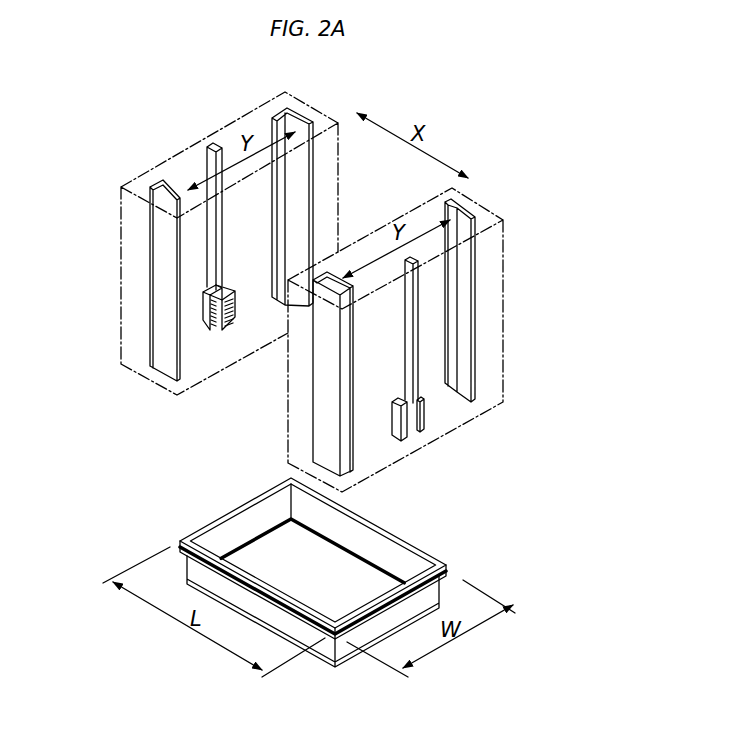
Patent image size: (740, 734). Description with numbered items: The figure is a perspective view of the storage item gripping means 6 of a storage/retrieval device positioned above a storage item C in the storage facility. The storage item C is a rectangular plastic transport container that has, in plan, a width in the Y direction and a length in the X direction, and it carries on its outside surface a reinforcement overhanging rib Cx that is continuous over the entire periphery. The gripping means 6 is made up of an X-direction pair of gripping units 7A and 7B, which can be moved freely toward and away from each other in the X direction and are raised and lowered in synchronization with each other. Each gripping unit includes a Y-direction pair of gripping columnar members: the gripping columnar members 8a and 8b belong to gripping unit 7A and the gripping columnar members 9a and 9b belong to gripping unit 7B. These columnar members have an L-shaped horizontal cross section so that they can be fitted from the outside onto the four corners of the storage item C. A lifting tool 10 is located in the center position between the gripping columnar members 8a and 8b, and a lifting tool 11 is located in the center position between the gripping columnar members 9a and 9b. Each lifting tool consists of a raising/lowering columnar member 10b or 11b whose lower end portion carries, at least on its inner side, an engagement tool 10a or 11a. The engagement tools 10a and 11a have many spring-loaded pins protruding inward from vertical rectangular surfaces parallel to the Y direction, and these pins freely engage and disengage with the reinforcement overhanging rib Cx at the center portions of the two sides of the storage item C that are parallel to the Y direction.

The storage item gripping means 6 is at (108, 277).
The gripping unit 7A is at (171, 151).
The gripping unit 7B is at (510, 296).
The gripping columnar member 8a is at (163, 283).
The gripping columnar member 8b is at (313, 214).
The gripping columnar member 9a is at (352, 443).
The gripping columnar member 9b is at (467, 345).
The lifting tool 10 is at (196, 312).
The engagement tool 10a is at (236, 312).
The raising/lowering columnar member 10b is at (210, 235).
The lifting tool 11 is at (429, 417).
The engagement tool 11a is at (390, 417).
The raising/lowering columnar member 11b is at (417, 307).
The storage item C is at (220, 530).
The reinforcement overhanging rib Cx is at (246, 503).